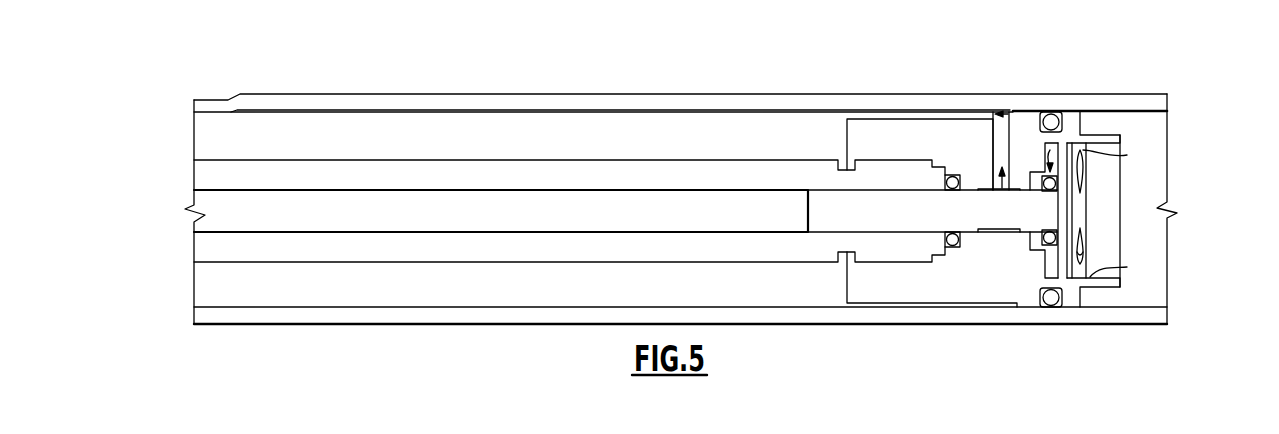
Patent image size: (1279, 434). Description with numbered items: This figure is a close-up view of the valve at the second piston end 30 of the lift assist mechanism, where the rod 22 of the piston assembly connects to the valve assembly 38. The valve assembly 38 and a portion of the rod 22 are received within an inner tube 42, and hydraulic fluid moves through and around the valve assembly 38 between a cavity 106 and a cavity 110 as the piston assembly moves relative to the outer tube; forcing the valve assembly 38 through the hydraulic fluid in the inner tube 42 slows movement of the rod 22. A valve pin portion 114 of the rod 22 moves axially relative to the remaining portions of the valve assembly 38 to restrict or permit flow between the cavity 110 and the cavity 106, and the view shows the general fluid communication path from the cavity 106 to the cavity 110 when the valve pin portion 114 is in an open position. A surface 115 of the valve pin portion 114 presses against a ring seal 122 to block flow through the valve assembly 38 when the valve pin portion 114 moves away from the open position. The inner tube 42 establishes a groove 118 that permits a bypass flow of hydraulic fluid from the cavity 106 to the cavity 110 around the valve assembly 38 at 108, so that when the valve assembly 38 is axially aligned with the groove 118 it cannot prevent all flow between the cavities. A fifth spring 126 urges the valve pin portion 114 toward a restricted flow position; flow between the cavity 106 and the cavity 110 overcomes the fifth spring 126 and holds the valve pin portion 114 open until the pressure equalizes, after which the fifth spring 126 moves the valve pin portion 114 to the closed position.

The rod 22 is at (700, 225).
The second piston end 30 is at (1144, 192).
The valve assembly 38 is at (1015, 86).
The inner tube 42 is at (1060, 107).
The cavity 106 is at (800, 135).
The bypass flow location 108 is at (1118, 120).
The cavity 110 is at (1146, 148).
The valve pin portion 114 is at (976, 210).
The surface 115 is at (1050, 260).
The groove 118 is at (317, 108).
The ring seal 122 is at (1026, 244).
The fifth spring 126 is at (1083, 253).